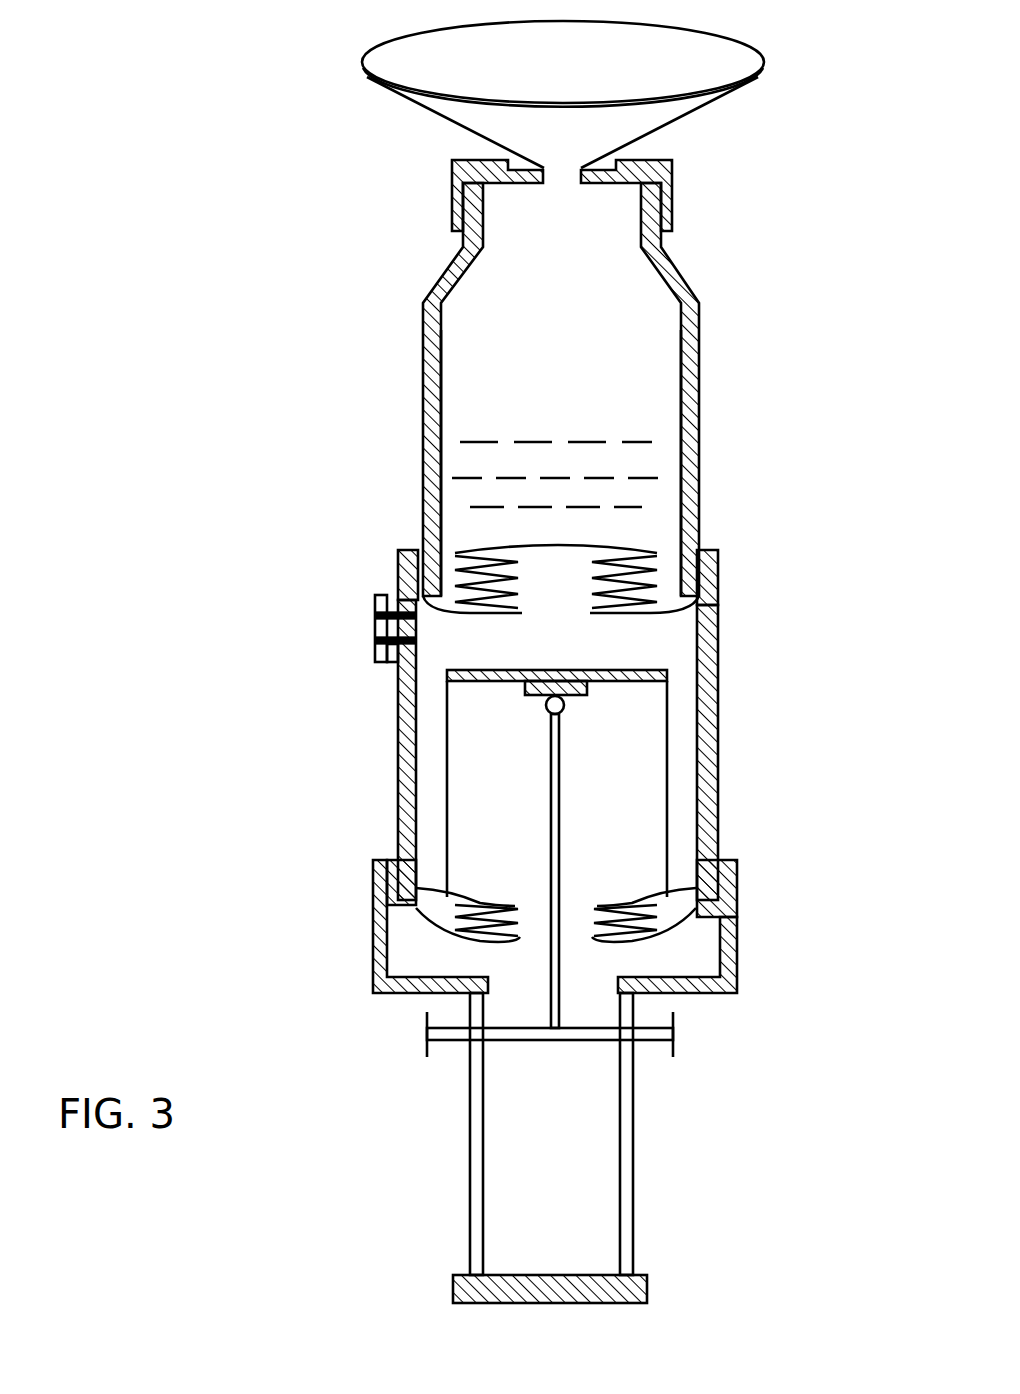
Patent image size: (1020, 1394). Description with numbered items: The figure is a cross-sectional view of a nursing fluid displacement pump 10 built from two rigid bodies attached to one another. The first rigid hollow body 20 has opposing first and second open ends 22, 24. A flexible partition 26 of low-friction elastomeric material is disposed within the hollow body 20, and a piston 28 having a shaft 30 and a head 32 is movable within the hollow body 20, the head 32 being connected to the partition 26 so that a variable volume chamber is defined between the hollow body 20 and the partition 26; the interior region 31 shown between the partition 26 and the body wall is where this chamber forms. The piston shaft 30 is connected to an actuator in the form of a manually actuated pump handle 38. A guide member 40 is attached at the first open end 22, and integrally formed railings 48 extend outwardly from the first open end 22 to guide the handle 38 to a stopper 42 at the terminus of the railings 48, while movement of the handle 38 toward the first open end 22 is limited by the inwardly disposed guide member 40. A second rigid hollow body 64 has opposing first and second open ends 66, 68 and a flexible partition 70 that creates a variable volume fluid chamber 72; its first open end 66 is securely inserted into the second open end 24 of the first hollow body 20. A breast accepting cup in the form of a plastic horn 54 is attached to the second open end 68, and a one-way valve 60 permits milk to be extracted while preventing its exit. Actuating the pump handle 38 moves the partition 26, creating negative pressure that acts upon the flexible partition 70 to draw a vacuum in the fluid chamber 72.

The nursing pump 10 is at (170, 252).
The plastic horn 54 is at (366, 52).
The second open end 68 is at (505, 228).
The variable volume fluid chamber 72 is at (495, 330).
The second rigid hollow body 64 is at (495, 412).
The first open end 66 is at (495, 534).
The flexible partition 70 is at (468, 576).
The second open end 24 is at (702, 549).
The rigid hollow body 20 is at (395, 830).
The one-way valve 60 is at (375, 603).
The chamber 31 is at (470, 643).
The head 32 is at (528, 685).
The piston 28 is at (546, 712).
The shaft 30 is at (550, 768).
The flexible partition 26 is at (462, 900).
The first open end 22 is at (706, 916).
The guide member 40 is at (373, 950).
The pump handle 38 is at (427, 1033).
The railings 48 is at (636, 1142).
The pump handle stopper 42 is at (648, 1288).